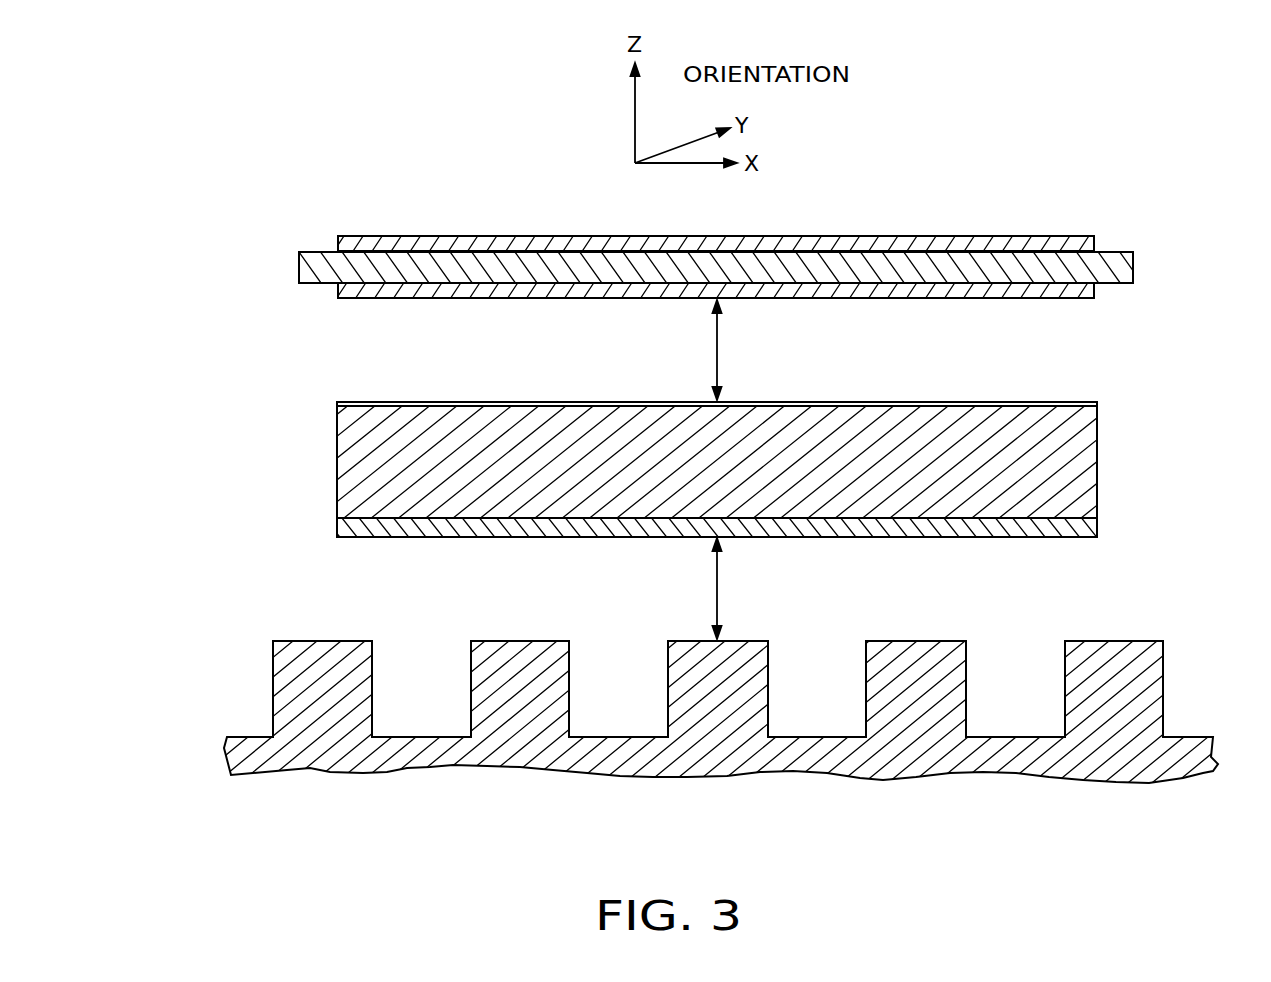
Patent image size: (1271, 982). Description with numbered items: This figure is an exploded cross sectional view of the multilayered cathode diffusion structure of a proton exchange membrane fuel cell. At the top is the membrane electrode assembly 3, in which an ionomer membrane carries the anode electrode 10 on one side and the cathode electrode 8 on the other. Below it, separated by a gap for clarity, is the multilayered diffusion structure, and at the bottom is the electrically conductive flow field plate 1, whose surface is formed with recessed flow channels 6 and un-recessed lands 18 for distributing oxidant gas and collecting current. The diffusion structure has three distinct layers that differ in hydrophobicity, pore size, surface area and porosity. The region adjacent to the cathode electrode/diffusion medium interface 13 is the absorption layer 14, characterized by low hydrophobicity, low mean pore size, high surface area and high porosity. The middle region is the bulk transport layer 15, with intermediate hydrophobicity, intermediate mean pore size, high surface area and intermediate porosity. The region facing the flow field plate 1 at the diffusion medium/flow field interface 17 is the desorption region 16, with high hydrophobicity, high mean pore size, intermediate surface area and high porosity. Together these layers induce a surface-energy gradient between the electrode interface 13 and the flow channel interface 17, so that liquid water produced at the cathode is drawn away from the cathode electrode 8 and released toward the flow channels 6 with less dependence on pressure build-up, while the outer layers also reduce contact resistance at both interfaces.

The flow field plate 1 is at (1100, 763).
The membrane electrode assembly 3 is at (482, 246).
The flow channel 6 is at (423, 722).
The cathode electrode 8 is at (1002, 305).
The anode electrode 10 is at (938, 233).
The electrode interface 13 is at (708, 347).
The absorption layer 14 is at (845, 394).
The bulk transport layer 15 is at (1104, 462).
The desorption region 16 is at (1003, 541).
The flow channel interface 17 is at (708, 583).
The lands 18 is at (709, 699).